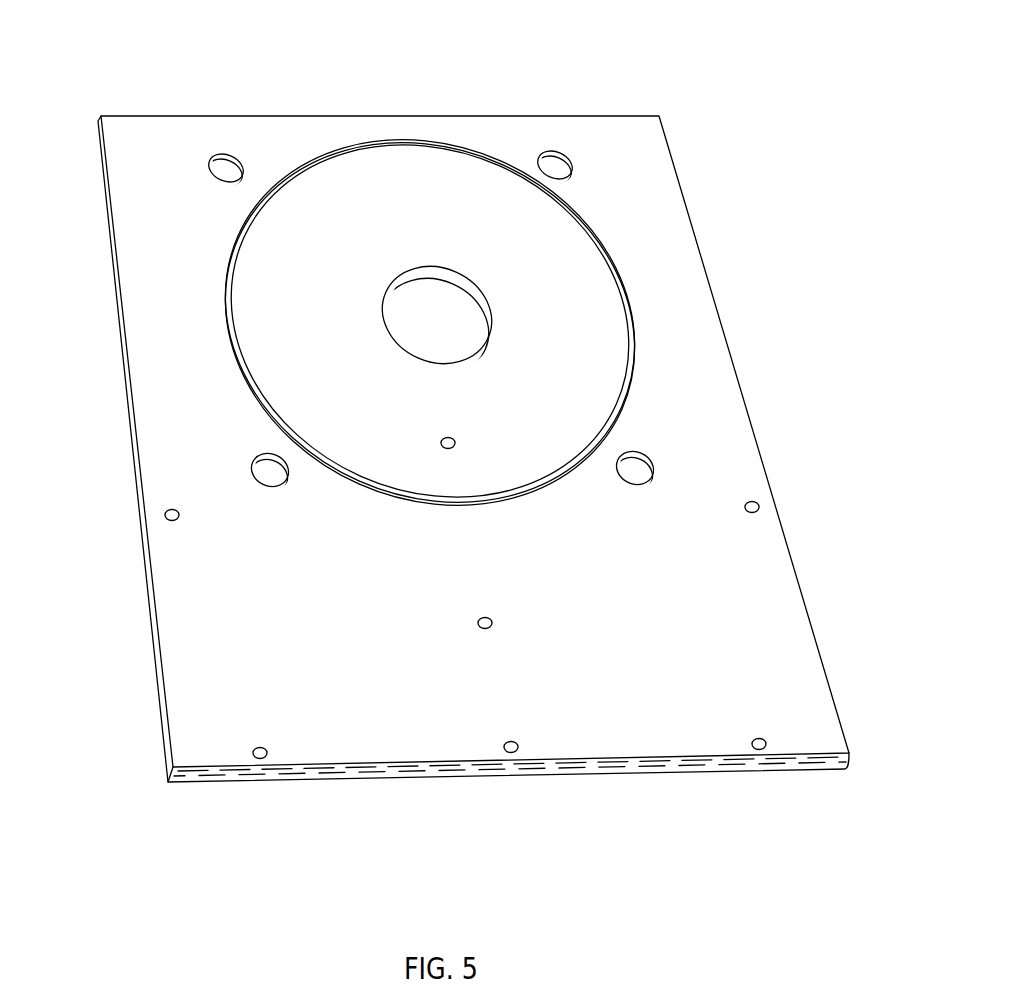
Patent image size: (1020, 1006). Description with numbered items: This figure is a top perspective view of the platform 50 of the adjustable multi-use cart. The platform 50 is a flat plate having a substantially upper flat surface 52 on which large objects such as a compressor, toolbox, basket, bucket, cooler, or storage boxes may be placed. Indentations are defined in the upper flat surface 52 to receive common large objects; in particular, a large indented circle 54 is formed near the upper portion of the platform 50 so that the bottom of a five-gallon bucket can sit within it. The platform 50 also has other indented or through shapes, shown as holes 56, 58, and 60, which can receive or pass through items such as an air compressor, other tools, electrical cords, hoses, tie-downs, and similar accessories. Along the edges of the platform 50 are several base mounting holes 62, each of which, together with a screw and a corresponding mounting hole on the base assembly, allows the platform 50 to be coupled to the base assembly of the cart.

The platform 50 is at (708, 125).
The upper flat surface 52 is at (247, 637).
The indented circle 54 is at (237, 335).
The hole 56 is at (442, 303).
The holes 58 is at (227, 172).
The holes 60 is at (166, 517).
The base mounting hole 62 is at (455, 442).